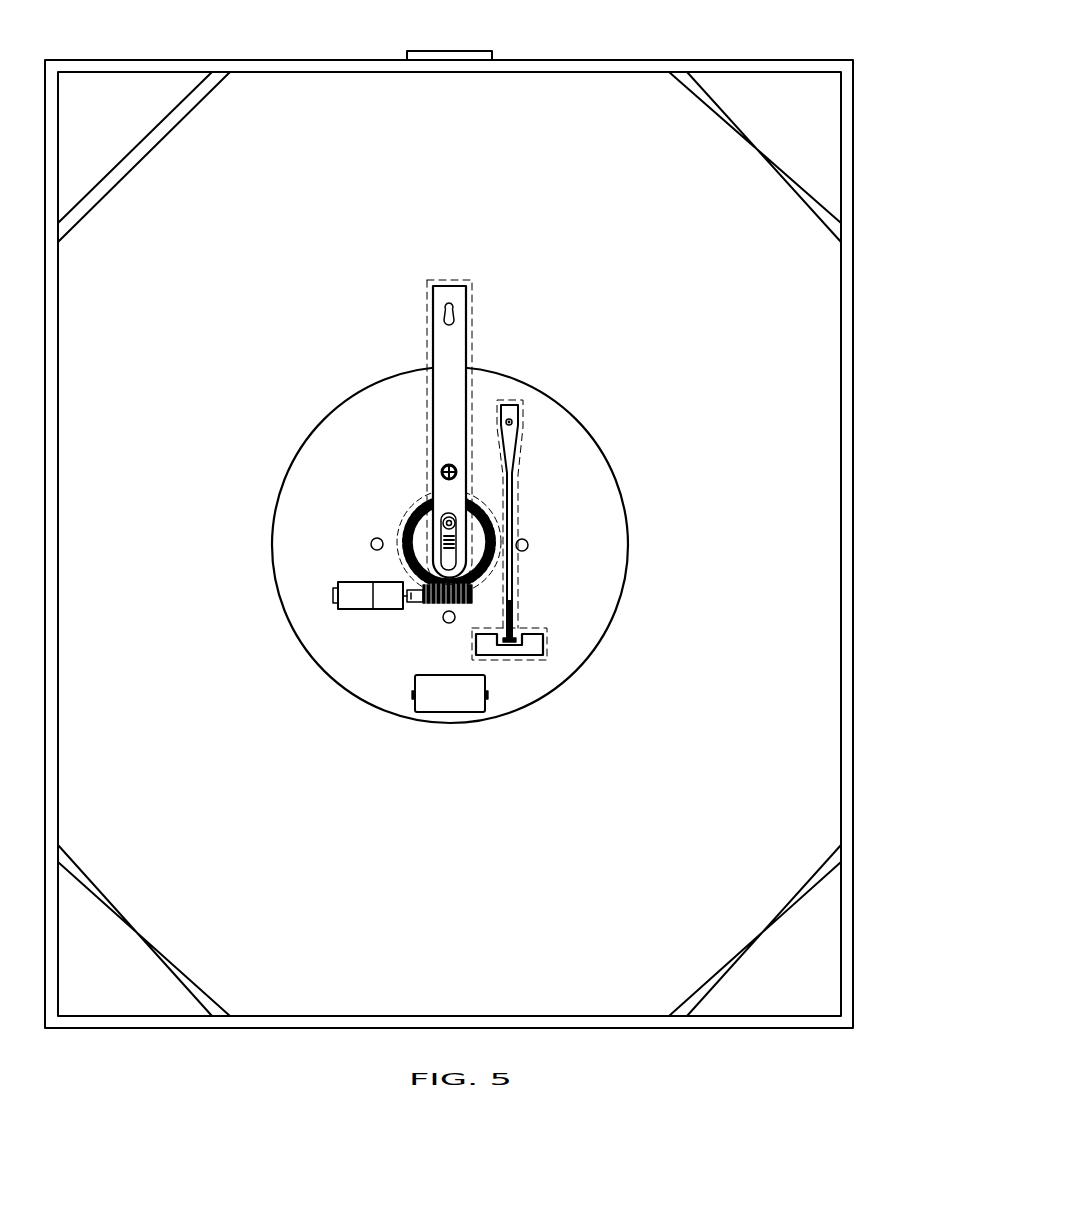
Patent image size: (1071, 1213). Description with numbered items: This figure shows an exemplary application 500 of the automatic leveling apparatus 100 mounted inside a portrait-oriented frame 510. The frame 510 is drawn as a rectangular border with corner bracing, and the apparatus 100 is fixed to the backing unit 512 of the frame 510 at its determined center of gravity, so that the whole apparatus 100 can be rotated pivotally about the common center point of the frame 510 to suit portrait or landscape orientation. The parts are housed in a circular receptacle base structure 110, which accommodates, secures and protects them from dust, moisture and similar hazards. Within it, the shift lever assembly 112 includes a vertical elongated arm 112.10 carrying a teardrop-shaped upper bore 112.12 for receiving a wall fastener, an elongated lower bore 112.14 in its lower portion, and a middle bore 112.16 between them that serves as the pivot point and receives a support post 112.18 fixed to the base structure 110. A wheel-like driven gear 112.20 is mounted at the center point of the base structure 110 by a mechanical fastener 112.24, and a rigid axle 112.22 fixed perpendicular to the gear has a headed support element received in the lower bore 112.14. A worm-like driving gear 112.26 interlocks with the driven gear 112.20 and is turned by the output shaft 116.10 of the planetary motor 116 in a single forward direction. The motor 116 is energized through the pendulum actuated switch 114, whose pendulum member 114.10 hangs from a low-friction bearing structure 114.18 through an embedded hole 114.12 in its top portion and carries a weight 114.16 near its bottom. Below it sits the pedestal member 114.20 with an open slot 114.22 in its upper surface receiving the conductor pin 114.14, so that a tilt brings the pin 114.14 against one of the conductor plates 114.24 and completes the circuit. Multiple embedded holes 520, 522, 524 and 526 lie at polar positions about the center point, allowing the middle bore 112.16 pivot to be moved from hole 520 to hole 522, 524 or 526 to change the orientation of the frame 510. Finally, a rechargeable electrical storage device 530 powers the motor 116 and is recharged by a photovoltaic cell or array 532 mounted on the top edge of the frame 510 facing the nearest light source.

The exemplary application of the automatic leveling apparatus 500 is at (882, 116).
The portrait-oriented frame 510 is at (535, 60).
The backing unit 512 is at (350, 130).
The photovoltaic cell or array 532 is at (407, 56).
The automatic leveling apparatus 100 is at (422, 489).
The receptacle base structure 110 is at (334, 410).
The shift lever assembly 112 is at (458, 420).
The elongated arm 112.10 is at (433, 302).
The upper bore 112.12 is at (455, 320).
The elongated lower bore 112.14 is at (412, 568).
The middle bore 112.16 is at (442, 470).
The support post 112.18 is at (447, 463).
The wheel-like driven gear 112.20 is at (418, 507).
The rigid axle 112.22 is at (500, 531).
The mechanical fastener 112.24 is at (444, 538).
The worm-like driving gear 112.26 is at (478, 593).
The pendulum actuated switch 114 is at (536, 540).
The pendulum member 114.10 is at (513, 497).
The embedded hole 114.12 is at (518, 424).
The conductor pin 114.14 is at (513, 657).
The weight 114.16 is at (516, 617).
The bearing structure 114.18 is at (511, 419).
The pedestal member 114.20 is at (542, 655).
The open slot 114.22 is at (522, 638).
The conductor plates 114.24 is at (478, 648).
The planetary motor 116 is at (335, 612).
The output shaft 116.10 is at (419, 604).
The embedded hole 520 is at (456, 472).
The embedded hole 522 is at (529, 548).
The embedded hole 524 is at (444, 622).
The embedded hole 526 is at (371, 545).
The rechargeable electrical storage device 530 is at (414, 702).